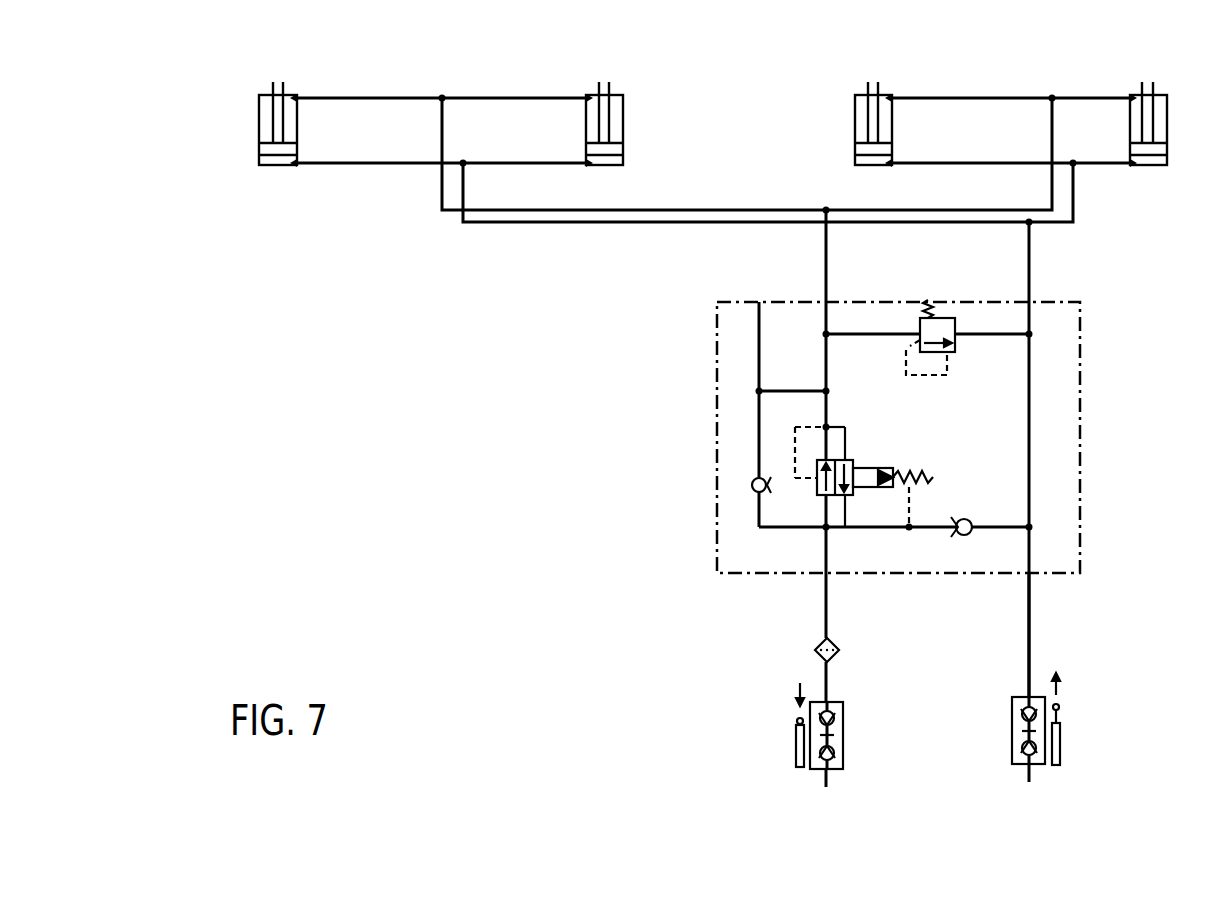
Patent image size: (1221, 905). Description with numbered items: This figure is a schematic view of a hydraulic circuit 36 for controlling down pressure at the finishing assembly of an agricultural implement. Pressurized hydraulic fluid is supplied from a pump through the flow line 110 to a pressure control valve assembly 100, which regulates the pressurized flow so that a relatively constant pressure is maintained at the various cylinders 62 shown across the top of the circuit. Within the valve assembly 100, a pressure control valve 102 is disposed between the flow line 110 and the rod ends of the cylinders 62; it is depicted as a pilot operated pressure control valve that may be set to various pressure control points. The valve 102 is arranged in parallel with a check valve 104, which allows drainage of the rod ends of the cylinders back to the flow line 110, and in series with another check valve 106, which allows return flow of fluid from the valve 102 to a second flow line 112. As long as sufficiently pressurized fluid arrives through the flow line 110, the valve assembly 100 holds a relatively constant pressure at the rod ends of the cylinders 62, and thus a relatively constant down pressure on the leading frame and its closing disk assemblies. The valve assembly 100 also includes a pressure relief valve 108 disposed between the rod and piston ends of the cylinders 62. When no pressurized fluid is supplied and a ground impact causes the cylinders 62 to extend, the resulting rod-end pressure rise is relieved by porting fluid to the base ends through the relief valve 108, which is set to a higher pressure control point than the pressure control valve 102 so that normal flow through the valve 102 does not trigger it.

The hydraulic leveling system 36 is at (231, 85).
The cylinders 62 is at (589, 97).
The pressure control valve assembly 100 is at (716, 546).
The pressure control valve 102 is at (816, 487).
The check valve 104 is at (752, 486).
The check valve 106 is at (972, 533).
The pressure relief valve 108 is at (956, 352).
The flow line 110 is at (822, 667).
The flow line 112 is at (1029, 658).